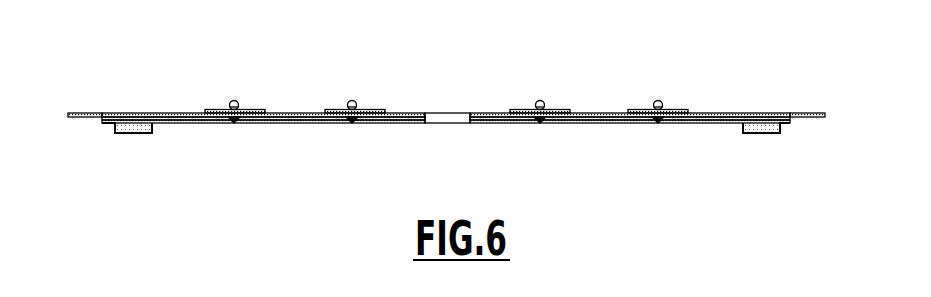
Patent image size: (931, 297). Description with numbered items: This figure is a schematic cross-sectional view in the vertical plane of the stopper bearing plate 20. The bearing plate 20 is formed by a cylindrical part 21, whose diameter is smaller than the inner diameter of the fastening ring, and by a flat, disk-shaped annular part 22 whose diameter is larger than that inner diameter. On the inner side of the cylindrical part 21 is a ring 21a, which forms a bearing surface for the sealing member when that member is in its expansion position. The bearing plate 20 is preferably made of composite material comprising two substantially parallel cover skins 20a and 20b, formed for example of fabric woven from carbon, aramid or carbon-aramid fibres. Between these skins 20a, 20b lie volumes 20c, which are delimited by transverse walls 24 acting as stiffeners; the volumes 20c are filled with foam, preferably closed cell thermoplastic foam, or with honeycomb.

The bearing plate 20 is at (366, 108).
The cover skin 20a is at (168, 112).
The cover skin 20b is at (718, 124).
The volumes 20c is at (276, 124).
The cylindrical part 21 is at (525, 109).
The ring 21a is at (128, 134).
The flat annular part 22 is at (75, 112).
The transverse walls 24 is at (230, 124).